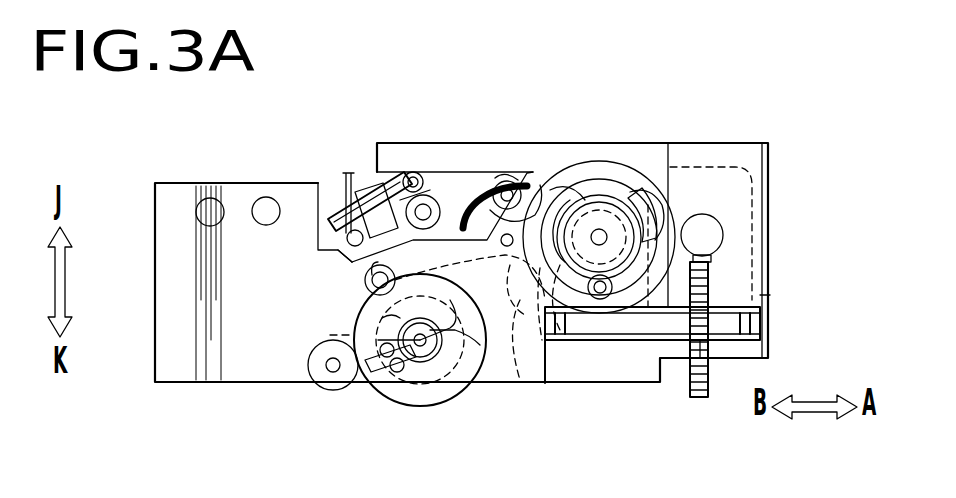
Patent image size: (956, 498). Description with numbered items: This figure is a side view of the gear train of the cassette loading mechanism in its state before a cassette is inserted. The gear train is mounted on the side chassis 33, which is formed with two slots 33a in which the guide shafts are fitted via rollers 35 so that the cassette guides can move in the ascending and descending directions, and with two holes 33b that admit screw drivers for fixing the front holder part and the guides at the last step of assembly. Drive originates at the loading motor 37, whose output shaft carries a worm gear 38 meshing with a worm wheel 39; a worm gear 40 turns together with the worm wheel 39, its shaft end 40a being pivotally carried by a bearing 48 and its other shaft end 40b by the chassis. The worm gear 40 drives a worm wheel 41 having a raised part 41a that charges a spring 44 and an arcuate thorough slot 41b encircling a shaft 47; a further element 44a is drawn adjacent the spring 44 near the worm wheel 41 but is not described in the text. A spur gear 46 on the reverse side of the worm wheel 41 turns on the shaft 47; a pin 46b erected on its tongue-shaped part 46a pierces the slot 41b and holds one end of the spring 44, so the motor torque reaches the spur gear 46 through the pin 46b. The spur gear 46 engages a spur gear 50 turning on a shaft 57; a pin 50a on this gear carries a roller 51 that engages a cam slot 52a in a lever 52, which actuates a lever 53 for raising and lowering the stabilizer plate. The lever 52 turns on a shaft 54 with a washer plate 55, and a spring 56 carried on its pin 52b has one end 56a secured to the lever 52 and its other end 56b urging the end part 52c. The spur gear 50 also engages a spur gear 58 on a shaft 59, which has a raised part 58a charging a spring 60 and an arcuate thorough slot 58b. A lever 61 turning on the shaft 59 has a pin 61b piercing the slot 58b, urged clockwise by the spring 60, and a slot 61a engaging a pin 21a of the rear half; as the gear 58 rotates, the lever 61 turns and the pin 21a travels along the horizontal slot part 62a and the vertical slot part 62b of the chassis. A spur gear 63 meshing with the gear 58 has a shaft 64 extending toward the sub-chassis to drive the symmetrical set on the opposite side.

The pin 21a is at (350, 334).
The side chassis 33 is at (168, 273).
The slots 33a is at (548, 162).
The holes 33b is at (262, 198).
The rollers 35 is at (530, 162).
The loading motor 37 is at (745, 180).
The worm gear 38 is at (704, 232).
The worm wheel 39 is at (712, 397).
The worm gear 40 is at (640, 345).
The shaft end 40a is at (572, 345).
The shaft end 40b is at (762, 310).
The worm wheel 41 is at (645, 195).
The raised part 41a is at (660, 214).
The thorough slot 41b is at (602, 230).
The spring 44 is at (702, 214).
The roller 44a is at (605, 300).
The spur gear 46 is at (580, 345).
The tongue-shaped part 46a is at (700, 329).
The pin 46b is at (603, 322).
The shaft 47 is at (625, 186).
The bearing 48 is at (672, 360).
The spur gear 50 is at (521, 184).
The pin 50a is at (513, 178).
The roller 51 is at (506, 188).
The lever 52 is at (480, 186).
The cam slot 52a is at (500, 241).
The pin 52b is at (402, 198).
The end part 52c is at (338, 256).
The lever 53 is at (347, 172).
The shaft 54 is at (415, 171).
The washer plate 55 is at (430, 196).
The spring 56 is at (387, 172).
The end 56a is at (372, 198).
The end 56b is at (333, 190).
The shaft 57 is at (555, 165).
The spur gear 58 is at (420, 396).
The raised part 58a is at (452, 400).
The thorough slot 58b is at (352, 380).
The shaft 59 is at (390, 375).
The spring 60 is at (415, 352).
The lever 61 is at (370, 276).
The slot 61a is at (386, 318).
The pin 61b is at (384, 357).
The horizontally extending slot part 62a is at (365, 274).
The vertically extending slot part 62b is at (488, 300).
The spur gear 63 is at (302, 368).
The shaft 64 is at (332, 372).